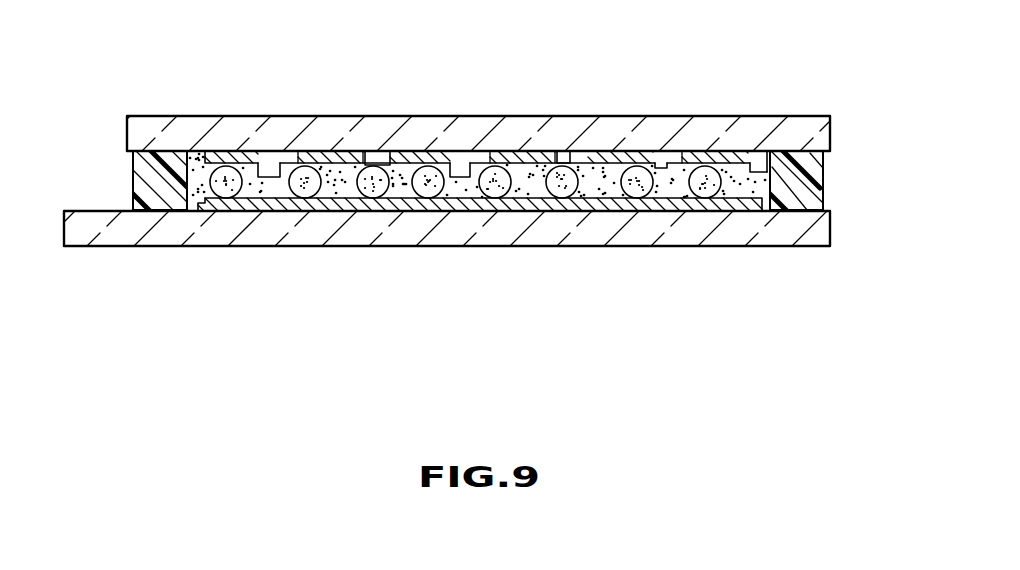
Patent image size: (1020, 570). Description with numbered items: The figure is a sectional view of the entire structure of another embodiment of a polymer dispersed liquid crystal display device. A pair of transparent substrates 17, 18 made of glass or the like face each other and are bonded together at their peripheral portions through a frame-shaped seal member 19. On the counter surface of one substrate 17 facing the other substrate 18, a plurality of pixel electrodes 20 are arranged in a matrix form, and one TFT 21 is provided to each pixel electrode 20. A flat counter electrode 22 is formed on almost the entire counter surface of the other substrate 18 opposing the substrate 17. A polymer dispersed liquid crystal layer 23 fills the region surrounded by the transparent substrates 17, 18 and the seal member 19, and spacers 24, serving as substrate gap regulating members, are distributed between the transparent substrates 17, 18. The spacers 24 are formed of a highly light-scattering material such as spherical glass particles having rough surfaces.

The transparent substrate 17 is at (726, 126).
The transparent substrate 18 is at (757, 232).
The seal member 19 is at (142, 188).
The pixel electrode 20 is at (240, 155).
The TFT 21 is at (378, 160).
The counter electrode 22 is at (431, 205).
The polymer dispersed liquid crystal layer 23 is at (344, 161).
The spacer 24 is at (228, 192).